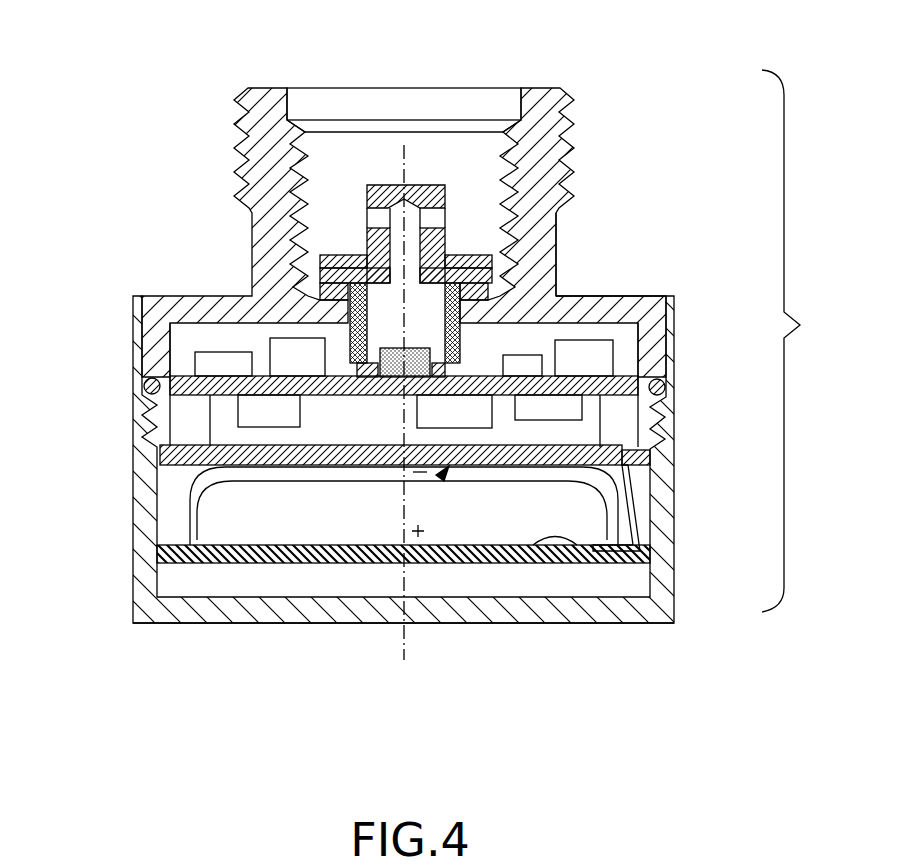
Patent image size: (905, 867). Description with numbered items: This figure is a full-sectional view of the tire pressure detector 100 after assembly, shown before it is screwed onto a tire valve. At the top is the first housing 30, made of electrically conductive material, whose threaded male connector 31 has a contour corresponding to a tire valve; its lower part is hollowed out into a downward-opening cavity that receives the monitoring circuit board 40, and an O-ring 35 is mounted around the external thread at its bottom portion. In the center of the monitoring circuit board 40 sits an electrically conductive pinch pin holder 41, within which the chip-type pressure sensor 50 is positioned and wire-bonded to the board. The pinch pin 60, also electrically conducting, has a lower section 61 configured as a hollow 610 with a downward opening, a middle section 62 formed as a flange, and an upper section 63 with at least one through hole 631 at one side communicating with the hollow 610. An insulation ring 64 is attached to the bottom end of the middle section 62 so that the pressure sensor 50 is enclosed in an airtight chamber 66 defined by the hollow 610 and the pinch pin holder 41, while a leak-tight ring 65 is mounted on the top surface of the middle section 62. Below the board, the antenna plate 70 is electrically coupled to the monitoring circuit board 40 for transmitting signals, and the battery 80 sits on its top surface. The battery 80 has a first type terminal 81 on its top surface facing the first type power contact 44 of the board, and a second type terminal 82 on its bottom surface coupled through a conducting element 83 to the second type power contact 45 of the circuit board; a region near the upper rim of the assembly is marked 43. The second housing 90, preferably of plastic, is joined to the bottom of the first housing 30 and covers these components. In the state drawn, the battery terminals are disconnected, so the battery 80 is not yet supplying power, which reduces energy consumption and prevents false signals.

The first housing 30 is at (221, 104).
The threaded male connector 31 is at (474, 110).
The pinch pin 60 is at (367, 170).
The upper section 63 is at (447, 203).
The through hole 631 is at (447, 222).
The insulation ring 64 is at (556, 252).
The housing upper rim 43 is at (556, 290).
The O-ring 35 is at (664, 385).
The second type power contact 45 is at (652, 456).
The conducting element 83 is at (646, 507).
The tire pressure detector 100 is at (805, 341).
The leak-tight ring 65 is at (350, 256).
The middle section 62 is at (320, 263).
The pressure sensor 50 is at (318, 282).
The pinch pin holder 41 is at (350, 325).
The lower section 61 is at (352, 352).
The hollow 610 is at (292, 396).
The airtight chamber 66 is at (404, 358).
The monitoring circuit board 40 is at (167, 483).
The second housing 90 is at (133, 585).
The battery 80 is at (263, 525).
The antenna plate 70 is at (323, 550).
The first type power contact 44 is at (442, 475).
The first type terminal 81 is at (487, 471).
The second type terminal 82 is at (577, 545).